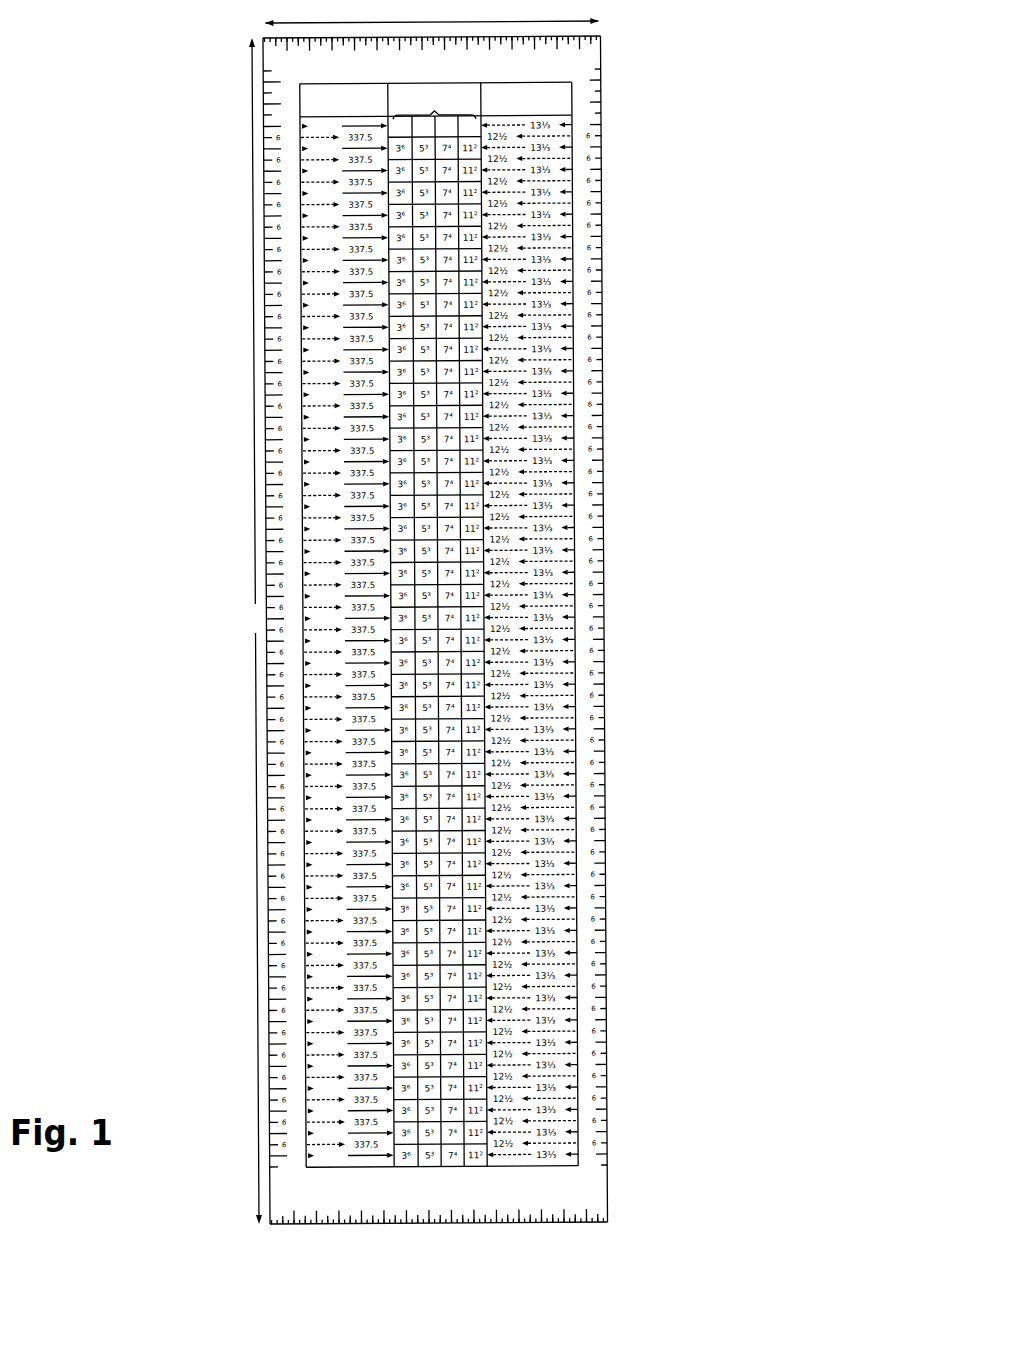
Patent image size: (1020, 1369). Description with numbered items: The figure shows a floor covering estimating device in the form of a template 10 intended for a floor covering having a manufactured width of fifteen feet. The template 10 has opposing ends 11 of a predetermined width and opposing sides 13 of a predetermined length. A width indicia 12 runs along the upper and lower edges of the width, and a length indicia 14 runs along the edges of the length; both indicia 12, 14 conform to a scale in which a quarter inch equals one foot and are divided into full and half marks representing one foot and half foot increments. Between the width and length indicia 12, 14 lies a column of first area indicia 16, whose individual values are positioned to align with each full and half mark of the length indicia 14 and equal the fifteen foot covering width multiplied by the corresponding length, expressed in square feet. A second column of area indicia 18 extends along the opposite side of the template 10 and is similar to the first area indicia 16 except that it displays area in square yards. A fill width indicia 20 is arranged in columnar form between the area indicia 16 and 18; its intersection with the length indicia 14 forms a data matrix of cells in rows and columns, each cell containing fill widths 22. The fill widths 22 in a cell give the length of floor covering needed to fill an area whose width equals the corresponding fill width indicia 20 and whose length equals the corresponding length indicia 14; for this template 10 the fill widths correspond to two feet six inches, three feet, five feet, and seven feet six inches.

The template 10 is at (436, 617).
The opposing ends 11 is at (276, 36).
The width indicia 12 is at (568, 37).
The opposing sides 13 is at (265, 210).
The length indicia 14 is at (265, 252).
The first area indicia 16 is at (318, 82).
The second area indicia 18 is at (557, 82).
The fill width indicia 20 is at (455, 88).
The fill widths 22 is at (433, 113).